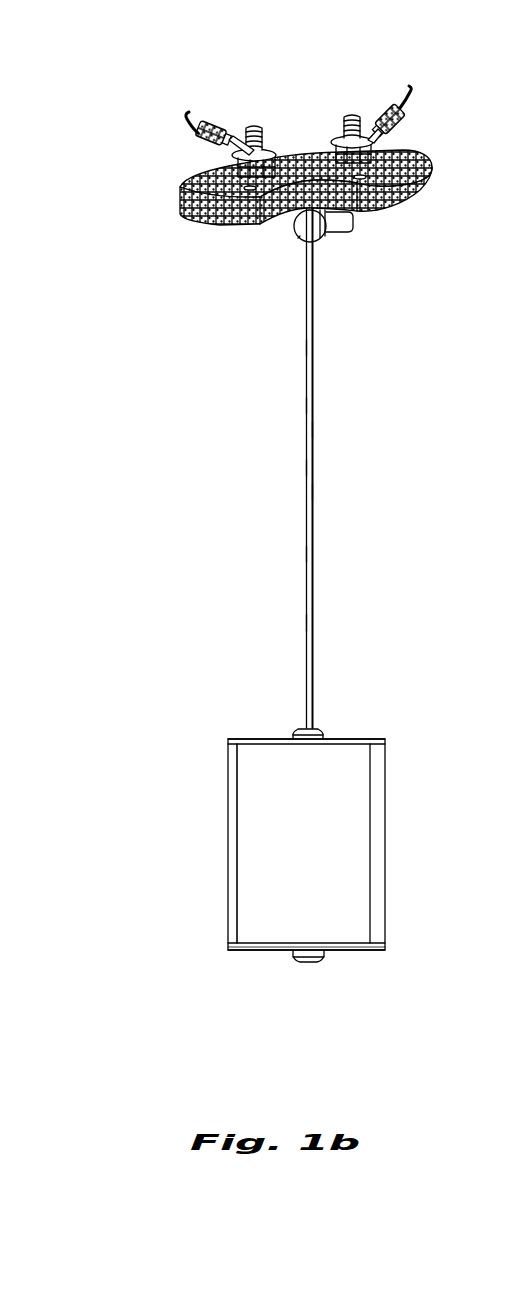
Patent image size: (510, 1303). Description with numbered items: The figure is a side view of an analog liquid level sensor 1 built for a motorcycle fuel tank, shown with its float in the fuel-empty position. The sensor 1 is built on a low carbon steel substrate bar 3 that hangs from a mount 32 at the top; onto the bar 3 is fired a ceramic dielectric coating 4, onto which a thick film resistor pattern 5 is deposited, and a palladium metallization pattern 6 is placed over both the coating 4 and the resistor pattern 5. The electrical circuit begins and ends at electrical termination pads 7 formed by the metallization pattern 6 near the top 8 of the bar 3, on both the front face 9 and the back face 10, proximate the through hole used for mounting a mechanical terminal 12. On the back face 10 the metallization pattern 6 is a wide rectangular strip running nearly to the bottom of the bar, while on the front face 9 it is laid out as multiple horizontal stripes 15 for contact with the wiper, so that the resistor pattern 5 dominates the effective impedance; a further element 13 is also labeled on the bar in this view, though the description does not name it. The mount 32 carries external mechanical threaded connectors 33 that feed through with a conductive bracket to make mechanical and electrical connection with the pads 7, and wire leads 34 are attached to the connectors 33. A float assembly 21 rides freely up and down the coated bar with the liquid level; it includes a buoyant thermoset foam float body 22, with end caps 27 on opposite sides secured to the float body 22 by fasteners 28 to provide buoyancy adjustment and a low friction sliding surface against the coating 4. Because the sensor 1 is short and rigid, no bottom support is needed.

The analog liquid level sensor 1 is at (165, 138).
The substrate bar 3 is at (306, 348).
The ceramic dielectric coating 4 is at (306, 405).
The thick film resistor pattern 5 is at (306, 468).
The palladium metallization pattern 6 is at (312, 430).
The electrical termination pad 7 is at (318, 237).
The top of the bar 8 is at (295, 228).
The front face 9 is at (306, 553).
The back face 10 is at (313, 323).
The mechanical terminal 12 is at (298, 238).
The insulating spacer 13 is at (312, 492).
The horizontal stripes 15 is at (306, 623).
The float assembly 21 is at (227, 759).
The float body 22 is at (278, 818).
The end cap 27 is at (255, 738).
The fastener 28 is at (318, 727).
The mount 32 is at (203, 180).
The threaded connector 33 is at (332, 140).
The wire lead 34 is at (193, 125).